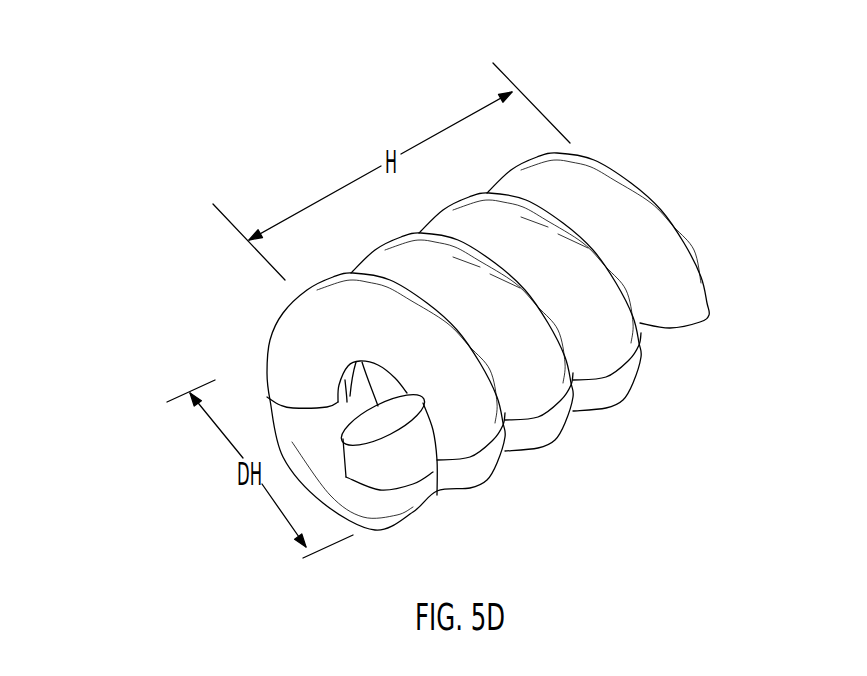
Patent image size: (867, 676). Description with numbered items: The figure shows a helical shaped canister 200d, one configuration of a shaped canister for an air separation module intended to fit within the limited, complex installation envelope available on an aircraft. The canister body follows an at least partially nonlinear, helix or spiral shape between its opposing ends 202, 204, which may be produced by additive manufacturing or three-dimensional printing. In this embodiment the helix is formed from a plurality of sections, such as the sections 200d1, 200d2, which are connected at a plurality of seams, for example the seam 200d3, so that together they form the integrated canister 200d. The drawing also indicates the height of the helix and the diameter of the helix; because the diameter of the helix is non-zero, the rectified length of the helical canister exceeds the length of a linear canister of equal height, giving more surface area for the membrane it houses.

The helical shaped canister 200d is at (263, 338).
The section 200d1 is at (541, 347).
The section 200d2 is at (558, 417).
The seam 200d3 is at (608, 381).
The end 202 is at (707, 277).
The end 204 is at (380, 440).